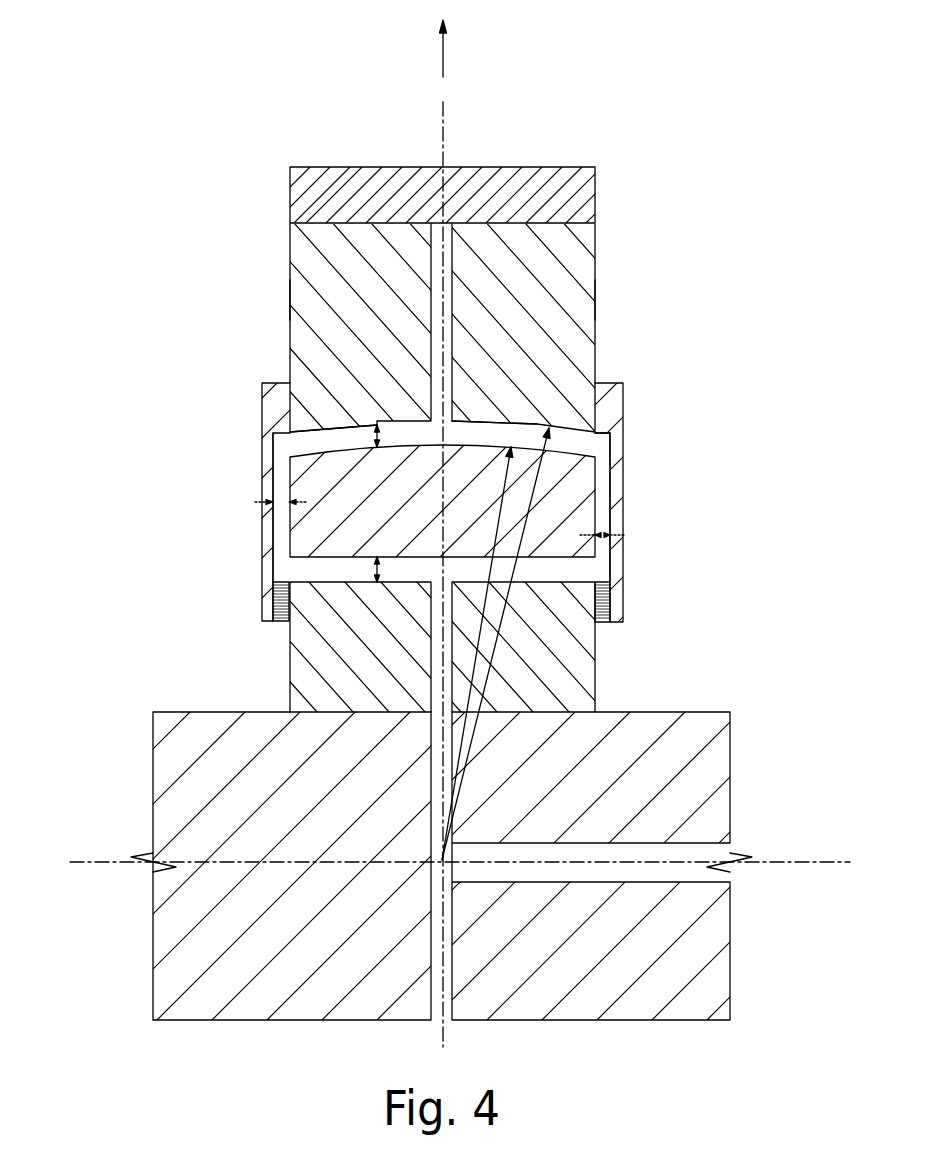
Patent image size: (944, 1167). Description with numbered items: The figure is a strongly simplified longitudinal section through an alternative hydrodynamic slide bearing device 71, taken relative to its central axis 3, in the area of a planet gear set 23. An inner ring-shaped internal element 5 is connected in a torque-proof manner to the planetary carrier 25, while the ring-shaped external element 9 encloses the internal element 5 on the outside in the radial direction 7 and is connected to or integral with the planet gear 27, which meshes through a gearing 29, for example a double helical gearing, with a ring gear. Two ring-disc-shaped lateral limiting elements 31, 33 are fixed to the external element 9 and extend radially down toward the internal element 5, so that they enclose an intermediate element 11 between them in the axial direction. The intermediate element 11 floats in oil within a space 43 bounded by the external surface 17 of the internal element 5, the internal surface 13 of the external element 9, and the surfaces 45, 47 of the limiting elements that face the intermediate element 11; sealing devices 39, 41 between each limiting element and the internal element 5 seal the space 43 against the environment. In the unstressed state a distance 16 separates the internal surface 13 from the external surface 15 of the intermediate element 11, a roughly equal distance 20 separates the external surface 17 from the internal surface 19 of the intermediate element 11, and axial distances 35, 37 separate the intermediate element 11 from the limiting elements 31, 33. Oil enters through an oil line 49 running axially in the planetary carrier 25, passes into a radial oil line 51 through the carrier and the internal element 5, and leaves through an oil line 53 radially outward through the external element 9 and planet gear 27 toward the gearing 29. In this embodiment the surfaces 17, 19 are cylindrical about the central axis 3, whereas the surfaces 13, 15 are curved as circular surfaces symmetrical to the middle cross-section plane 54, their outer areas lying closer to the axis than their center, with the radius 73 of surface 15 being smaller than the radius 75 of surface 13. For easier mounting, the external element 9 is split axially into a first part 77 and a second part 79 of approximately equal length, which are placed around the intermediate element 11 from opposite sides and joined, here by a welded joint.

The central axis 3 is at (797, 862).
The internal element 5 is at (585, 670).
The radial direction 7 is at (443, 50).
The external element 9 is at (545, 514).
The intermediate element 11 is at (573, 520).
The internal surface of the external element 13 is at (606, 425).
The external surface of the intermediate element 15 is at (373, 437).
The distance 16 is at (332, 445).
The external surface of the internal element 17 is at (545, 575).
The internal surface of the intermediate element 19 is at (432, 562).
The distance 20 is at (372, 572).
The planet gear set 23 is at (426, 306).
The planetary carrier 25 is at (172, 756).
The planet gear 27 is at (313, 277).
The gearing 29 is at (590, 210).
The lateral limiting element 31 is at (291, 430).
The lateral limiting element 33 is at (606, 462).
The distance 35 is at (262, 500).
The distance 37 is at (610, 535).
The sealing device 39 is at (273, 592).
The sealing device 41 is at (618, 618).
The space 43 is at (467, 448).
The surface of the lateral limiting element 45 is at (277, 532).
The surface of the lateral limiting element 47 is at (600, 487).
The oil line 49 is at (657, 862).
The oil line 51 is at (435, 833).
The oil line 53 is at (449, 286).
The middle cross-section plane 54 is at (443, 132).
The slide bearing device 71 is at (501, 514).
The radius 73 is at (465, 742).
The radius 75 is at (483, 697).
The first part 77 is at (560, 303).
The second part 79 is at (295, 300).